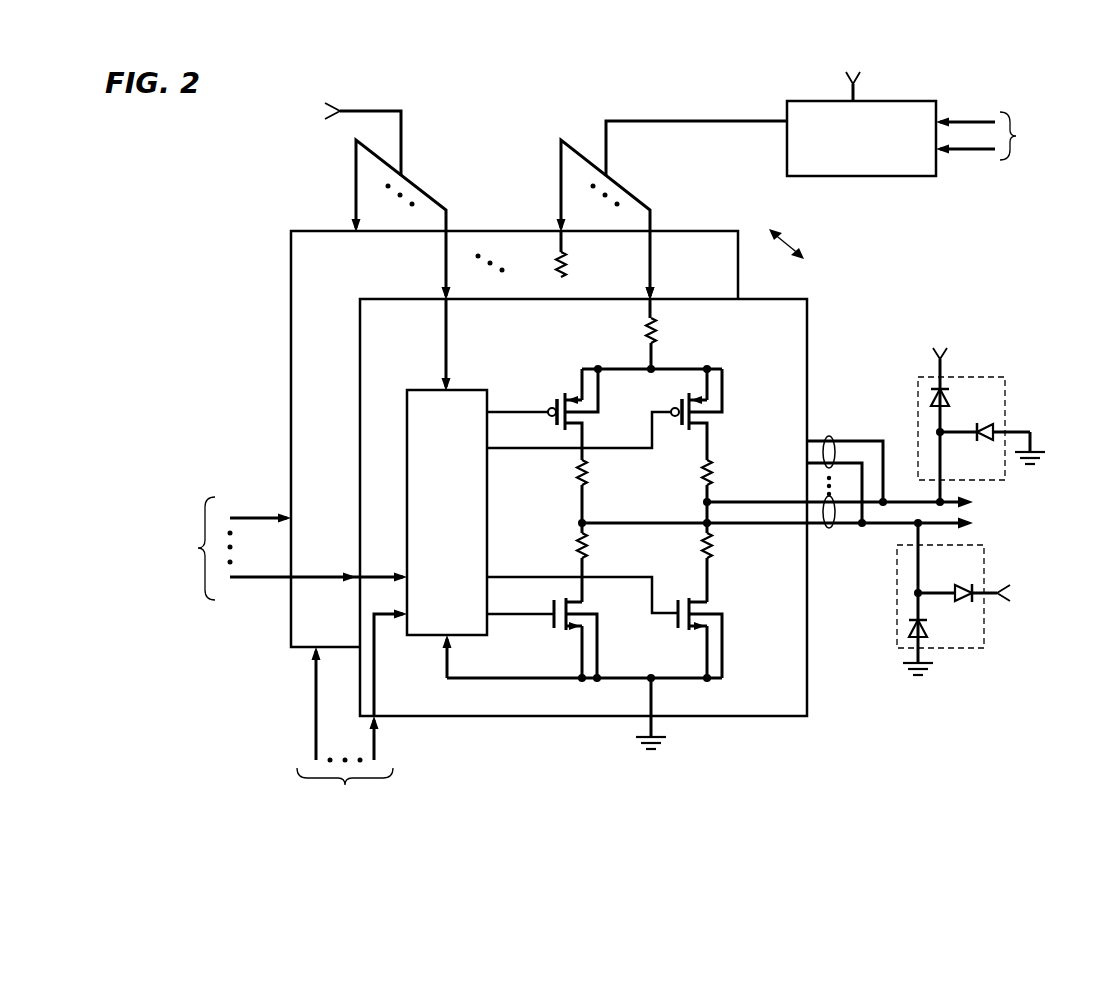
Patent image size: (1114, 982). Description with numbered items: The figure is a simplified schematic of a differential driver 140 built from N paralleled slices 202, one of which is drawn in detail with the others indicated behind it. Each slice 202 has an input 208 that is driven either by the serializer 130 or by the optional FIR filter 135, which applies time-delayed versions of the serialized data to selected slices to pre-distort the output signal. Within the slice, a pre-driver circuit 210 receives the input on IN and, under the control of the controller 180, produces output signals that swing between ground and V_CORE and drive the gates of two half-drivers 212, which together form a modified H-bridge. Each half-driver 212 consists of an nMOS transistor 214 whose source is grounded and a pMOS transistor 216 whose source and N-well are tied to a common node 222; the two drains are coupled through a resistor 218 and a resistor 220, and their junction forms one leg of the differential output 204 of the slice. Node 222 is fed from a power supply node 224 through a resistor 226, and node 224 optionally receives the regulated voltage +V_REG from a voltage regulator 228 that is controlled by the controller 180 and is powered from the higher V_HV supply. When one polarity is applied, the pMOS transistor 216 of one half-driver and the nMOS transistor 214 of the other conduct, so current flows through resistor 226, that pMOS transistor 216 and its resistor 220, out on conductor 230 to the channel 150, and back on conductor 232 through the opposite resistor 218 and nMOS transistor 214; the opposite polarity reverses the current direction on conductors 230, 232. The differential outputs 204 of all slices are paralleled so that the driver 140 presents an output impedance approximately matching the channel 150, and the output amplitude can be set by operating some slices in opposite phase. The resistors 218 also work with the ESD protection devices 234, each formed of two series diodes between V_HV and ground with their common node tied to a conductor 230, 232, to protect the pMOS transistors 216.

The driver 140 is at (163, 128).
The serializer 130 is at (141, 581).
The optional FIR filter 135 is at (141, 648).
The channel 150 is at (1037, 538).
The controller 180 is at (335, 849).
The slice 202 is at (709, 231).
The differential output 204 is at (830, 554).
The input 208 is at (357, 575).
The pre-driver circuit 210 is at (432, 640).
The half-driver 212 is at (755, 332).
The nMOS transistor 214 is at (582, 608).
The pMOS transistor 216 is at (548, 421).
The resistor 218 is at (578, 544).
The resistor 220 is at (578, 476).
The node 222 is at (648, 374).
The power supply node 224 is at (611, 176).
The resistor 226 is at (660, 338).
The voltage regulator 228 is at (787, 150).
The conductor 230 is at (750, 528).
The conductor 232 is at (750, 498).
The ESD protection device 234 is at (1005, 398).